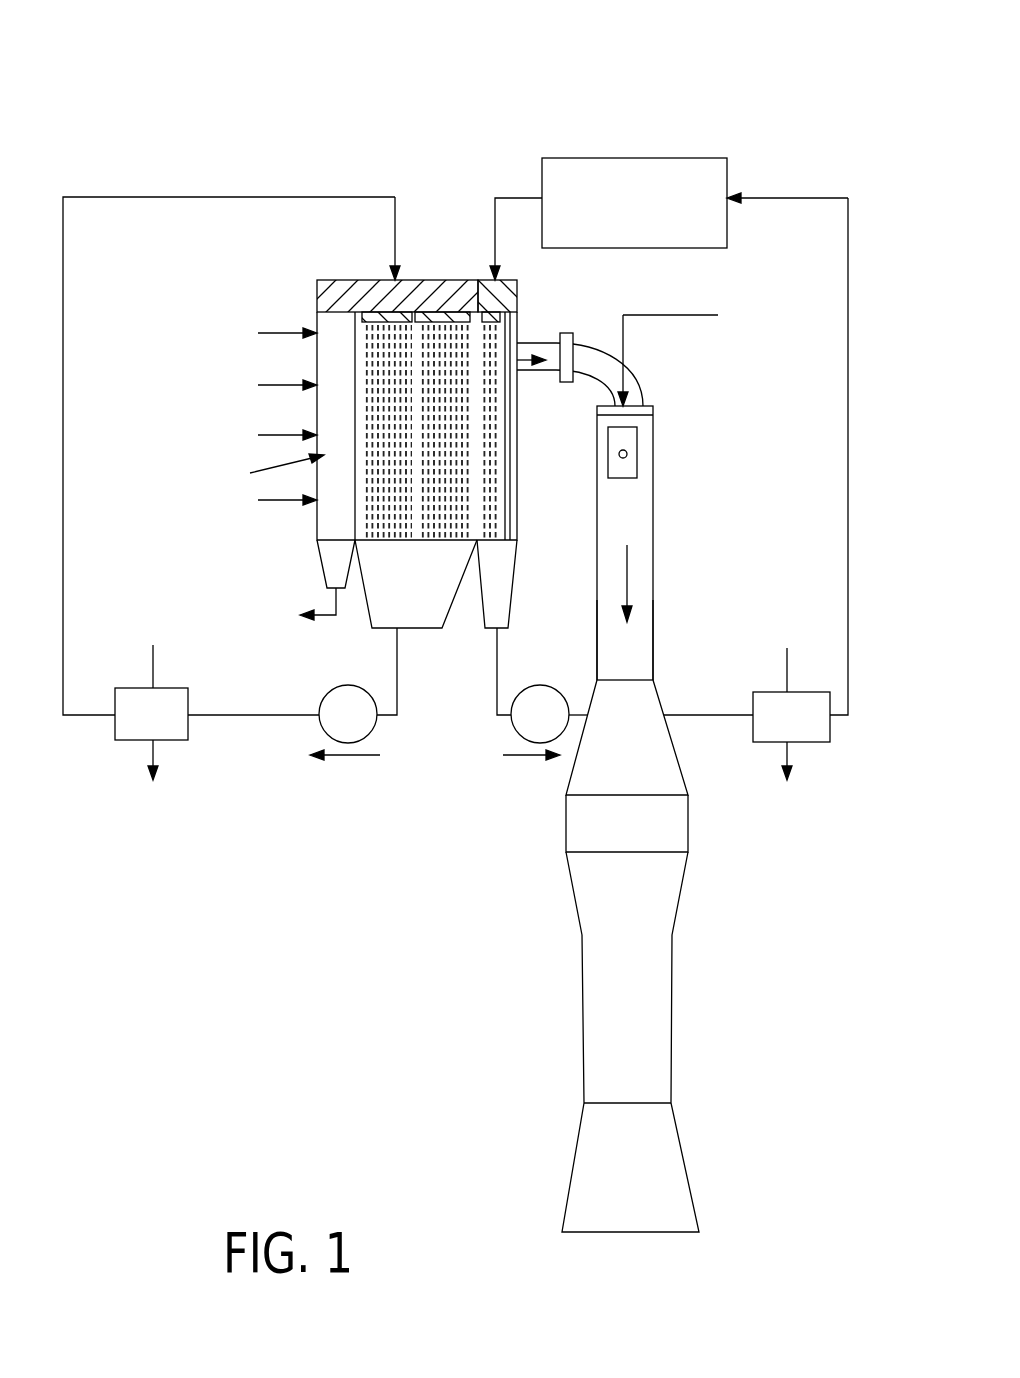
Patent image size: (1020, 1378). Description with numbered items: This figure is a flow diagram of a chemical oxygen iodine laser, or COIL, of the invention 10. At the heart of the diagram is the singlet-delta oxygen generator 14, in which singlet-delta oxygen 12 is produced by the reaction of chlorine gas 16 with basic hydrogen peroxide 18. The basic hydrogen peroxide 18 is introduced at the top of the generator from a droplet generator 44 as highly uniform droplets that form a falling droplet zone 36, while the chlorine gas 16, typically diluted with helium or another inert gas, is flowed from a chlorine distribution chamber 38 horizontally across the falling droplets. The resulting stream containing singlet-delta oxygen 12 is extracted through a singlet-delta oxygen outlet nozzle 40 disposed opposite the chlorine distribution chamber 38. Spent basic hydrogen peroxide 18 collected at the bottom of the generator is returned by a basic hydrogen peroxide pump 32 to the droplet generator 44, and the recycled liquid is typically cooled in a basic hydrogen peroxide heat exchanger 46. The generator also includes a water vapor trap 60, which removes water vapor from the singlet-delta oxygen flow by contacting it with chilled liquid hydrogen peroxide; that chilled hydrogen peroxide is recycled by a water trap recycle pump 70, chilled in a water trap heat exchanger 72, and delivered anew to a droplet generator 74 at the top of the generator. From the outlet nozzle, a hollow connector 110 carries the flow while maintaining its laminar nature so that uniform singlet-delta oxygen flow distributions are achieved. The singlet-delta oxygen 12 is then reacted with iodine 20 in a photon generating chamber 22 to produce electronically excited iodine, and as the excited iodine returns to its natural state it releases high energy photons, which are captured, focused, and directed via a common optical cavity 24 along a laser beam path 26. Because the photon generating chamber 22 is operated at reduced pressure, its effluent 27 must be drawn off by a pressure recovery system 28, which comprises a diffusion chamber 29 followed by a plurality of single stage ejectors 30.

The chemical oxygen iodine laser (COIL) 10 is at (525, 72).
The singlet-delta oxygen 12 is at (522, 348).
The singlet-delta oxygen generator 14 is at (436, 280).
The chlorine gas 16 is at (262, 333).
The basic hydrogen peroxide 18 is at (366, 342).
The iodine 20 is at (671, 315).
The photon generating chamber 22 is at (655, 439).
The common optical cavity 24 is at (640, 467).
The laser beam path 26 is at (626, 451).
The effluent 27 is at (628, 571).
The pressure recovery system 28 is at (661, 695).
The diffusion chamber 29 is at (654, 623).
The single stage ejectors 30 is at (676, 973).
The basic hydrogen peroxide pump 32 is at (372, 729).
The falling droplet zone 36 is at (394, 528).
The chlorine distribution chamber 38 is at (263, 442).
The singlet-delta oxygen outlet nozzle 40 is at (520, 338).
The droplet generator 44 is at (336, 290).
The basic hydrogen peroxide heat exchanger 46 is at (190, 698).
The water vapor trap 60 is at (514, 498).
The water trap recycle pump 70 is at (515, 725).
The water trap heat exchanger 72 is at (828, 744).
The droplet generator 74 is at (728, 163).
The hollow connector 110 is at (601, 345).